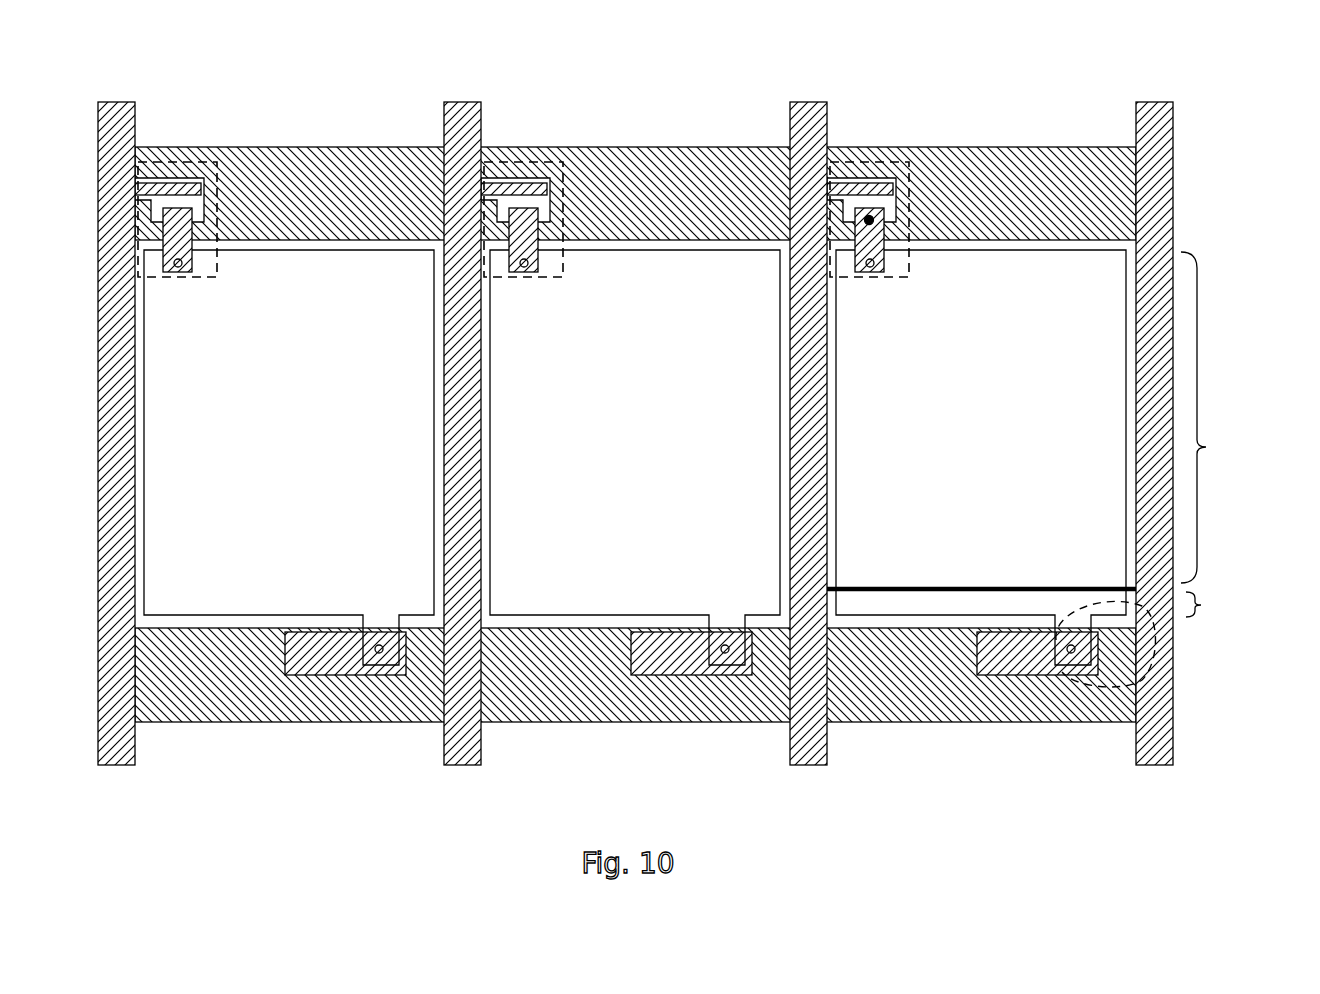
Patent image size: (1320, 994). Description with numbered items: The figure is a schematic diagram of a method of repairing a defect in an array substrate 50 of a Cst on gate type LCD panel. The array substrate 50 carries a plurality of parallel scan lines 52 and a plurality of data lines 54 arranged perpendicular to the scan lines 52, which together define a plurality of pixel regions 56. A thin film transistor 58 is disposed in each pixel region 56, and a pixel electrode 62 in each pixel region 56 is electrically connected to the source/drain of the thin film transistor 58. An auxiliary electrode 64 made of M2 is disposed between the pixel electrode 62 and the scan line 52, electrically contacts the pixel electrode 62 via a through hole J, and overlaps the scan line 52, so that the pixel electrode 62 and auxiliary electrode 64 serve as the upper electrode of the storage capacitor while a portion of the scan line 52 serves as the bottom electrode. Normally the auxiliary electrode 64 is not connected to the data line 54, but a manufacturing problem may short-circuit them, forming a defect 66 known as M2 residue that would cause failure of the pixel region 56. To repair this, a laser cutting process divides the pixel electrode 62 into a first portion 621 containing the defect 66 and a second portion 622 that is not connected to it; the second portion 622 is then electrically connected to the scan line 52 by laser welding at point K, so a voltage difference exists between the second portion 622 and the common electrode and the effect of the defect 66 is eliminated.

The array substrate 50 is at (1022, 80).
The scan line 52 is at (336, 172).
The data line 54 is at (106, 134).
The pixel region 56 is at (271, 349).
The thin film transistor 58 is at (176, 160).
The pixel electrode 62 is at (160, 371).
The first portion 621 is at (1220, 605).
The second portion 622 is at (1220, 417).
The auxiliary electrode 64 is at (305, 668).
The defect 66 is at (1088, 687).
The through hole J is at (725, 657).
The point K is at (874, 218).